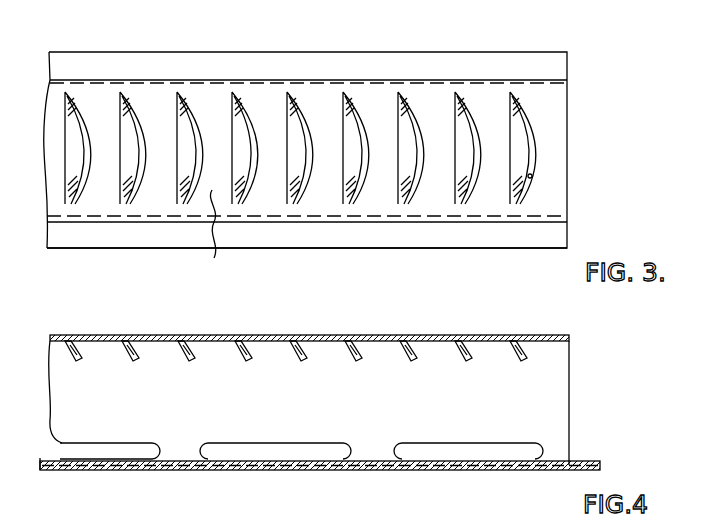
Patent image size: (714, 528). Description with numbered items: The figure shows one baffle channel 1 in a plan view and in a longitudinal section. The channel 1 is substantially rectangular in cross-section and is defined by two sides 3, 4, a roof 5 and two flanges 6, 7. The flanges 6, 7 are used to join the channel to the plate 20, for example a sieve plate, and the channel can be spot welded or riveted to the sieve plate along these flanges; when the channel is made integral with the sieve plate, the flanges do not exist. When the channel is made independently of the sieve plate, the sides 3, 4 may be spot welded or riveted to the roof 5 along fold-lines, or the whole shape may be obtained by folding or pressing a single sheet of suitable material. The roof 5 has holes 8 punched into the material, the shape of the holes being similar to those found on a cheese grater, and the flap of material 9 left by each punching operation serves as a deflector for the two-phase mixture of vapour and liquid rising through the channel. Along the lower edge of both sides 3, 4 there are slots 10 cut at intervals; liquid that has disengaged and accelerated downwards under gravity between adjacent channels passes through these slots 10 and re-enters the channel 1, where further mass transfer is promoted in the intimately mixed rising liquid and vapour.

In FIG. 3, the channel 1 is at (422, 84).
In FIG. 3, the side 3 is at (380, 222).
In FIG. 3, the side 4 is at (357, 80).
In FIG. 4, the side 4 is at (556, 372).
In FIG. 3, the roof 5 is at (216, 236).
In FIG. 4, the roof 5 is at (272, 336).
In FIG. 3, the flange 6 is at (516, 238).
In FIG. 3, the flange 7 is at (512, 62).
In FIG. 4, the flange 7 is at (178, 456).
In FIG. 3, the holes 8 is at (532, 177).
In FIG. 4, the holes 8 is at (136, 337).
In FIG. 3, the flap of material 9 is at (460, 135).
In FIG. 4, the flap of material 9 is at (245, 351).
In FIG. 3, the slots 10 is at (468, 82).
In FIG. 4, the slots 10 is at (408, 451).
In FIG. 4, the plate 20 is at (400, 471).